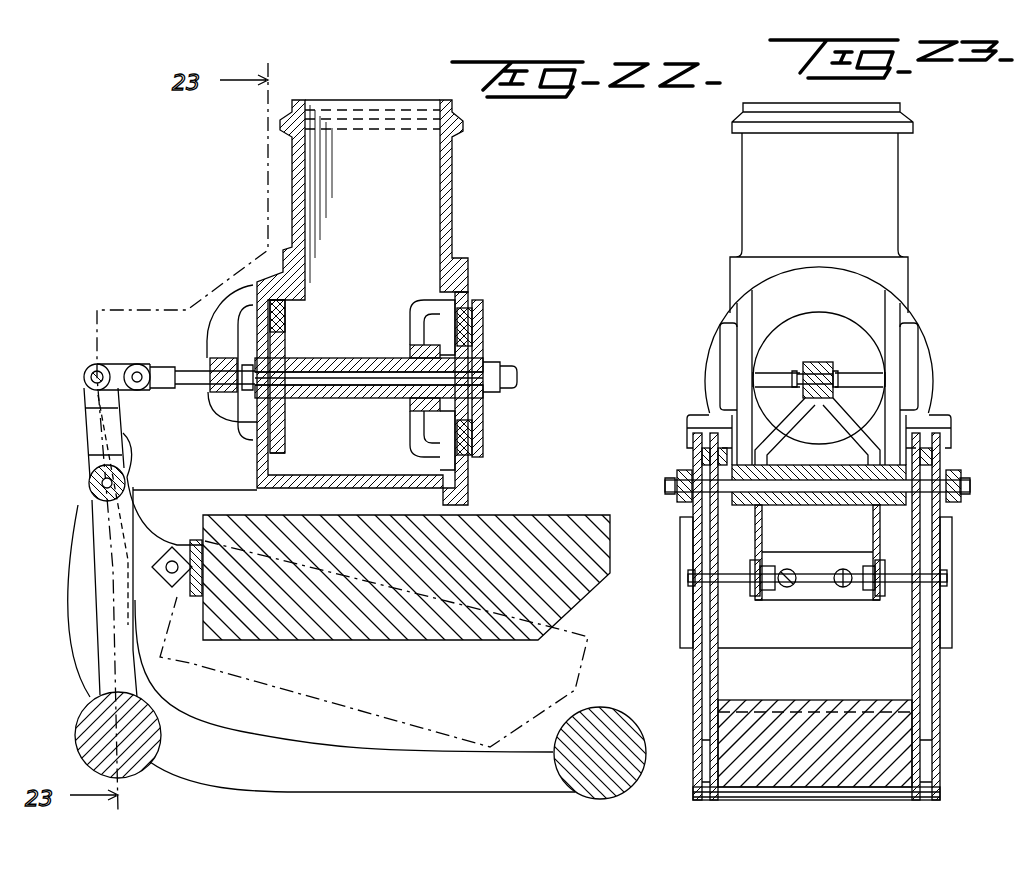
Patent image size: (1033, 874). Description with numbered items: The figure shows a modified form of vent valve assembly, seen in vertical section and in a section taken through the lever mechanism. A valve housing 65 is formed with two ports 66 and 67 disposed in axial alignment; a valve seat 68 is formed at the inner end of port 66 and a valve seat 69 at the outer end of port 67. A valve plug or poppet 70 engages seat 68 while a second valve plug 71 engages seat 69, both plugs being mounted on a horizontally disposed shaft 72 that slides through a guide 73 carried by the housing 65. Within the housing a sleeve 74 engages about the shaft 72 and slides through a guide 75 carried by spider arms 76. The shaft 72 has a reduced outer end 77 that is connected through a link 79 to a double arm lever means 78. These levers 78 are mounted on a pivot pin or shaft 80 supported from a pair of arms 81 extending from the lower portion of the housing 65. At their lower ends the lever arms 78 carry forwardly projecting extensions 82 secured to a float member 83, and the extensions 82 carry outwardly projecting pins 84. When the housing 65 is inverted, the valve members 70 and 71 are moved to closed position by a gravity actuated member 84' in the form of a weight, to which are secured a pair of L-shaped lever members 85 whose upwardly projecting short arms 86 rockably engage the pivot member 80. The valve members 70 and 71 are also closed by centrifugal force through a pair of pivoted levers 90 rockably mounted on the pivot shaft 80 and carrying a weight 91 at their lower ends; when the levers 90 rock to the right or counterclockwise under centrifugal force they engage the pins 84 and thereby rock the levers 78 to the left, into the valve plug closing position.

In FIG. 22, the valve housing 65 is at (481, 486).
In FIG. 23, the valve housing 65 is at (921, 294).
In FIG. 22, the port 66 is at (276, 446).
In FIG. 22, the port 67 is at (460, 420).
In FIG. 22, the valve seat 68 is at (255, 446).
In FIG. 23, the valve seat 68 is at (789, 322).
In FIG. 22, the valve seat 69 is at (485, 432).
In FIG. 22, the valve plug 70 is at (282, 440).
In FIG. 23, the valve plug 70 is at (837, 342).
In FIG. 22, the second valve plug 71 is at (485, 337).
In FIG. 22, the shaft 72 is at (366, 400).
In FIG. 22, the guide 73 is at (212, 362).
In FIG. 23, the guide 73 is at (855, 382).
In FIG. 22, the sleeve 74 is at (364, 405).
In FIG. 22, the guide 75 is at (412, 345).
In FIG. 22, the spider arms 76 is at (448, 296).
In FIG. 22, the reduced outer end 77 is at (186, 389).
In FIG. 22, the double arm lever means 78 is at (92, 433).
In FIG. 23, the double arm lever means 78 is at (872, 544).
In FIG. 22, the link 79 is at (118, 366).
In FIG. 23, the link 79 is at (821, 360).
In FIG. 22, the pivot pin 80 is at (90, 485).
In FIG. 23, the pivot pin 80 is at (800, 486).
In FIG. 22, the arms 81 is at (174, 493).
In FIG. 23, the arms 81 is at (745, 460).
In FIG. 22, the extensions 82 is at (195, 600).
In FIG. 23, the extensions 82 is at (860, 602).
In FIG. 22, the float member 83 is at (420, 618).
In FIG. 23, the float member 83 is at (947, 550).
In FIG. 22, the pins 84 is at (166, 584).
In FIG. 23, the pins 84 is at (810, 599).
In FIG. 22, the gravity actuated member 84' is at (600, 731).
In FIG. 23, the gravity actuated member 84' is at (846, 740).
In FIG. 22, the L-shaped lever members 85 is at (255, 747).
In FIG. 23, the L-shaped lever members 85 is at (951, 678).
In FIG. 23, the short arms 86 is at (940, 608).
In FIG. 22, the pivoted levers 90 is at (100, 565).
In FIG. 23, the pivoted levers 90 is at (713, 665).
In FIG. 22, the weight 91 is at (82, 723).
In FIG. 23, the weight 91 is at (790, 710).